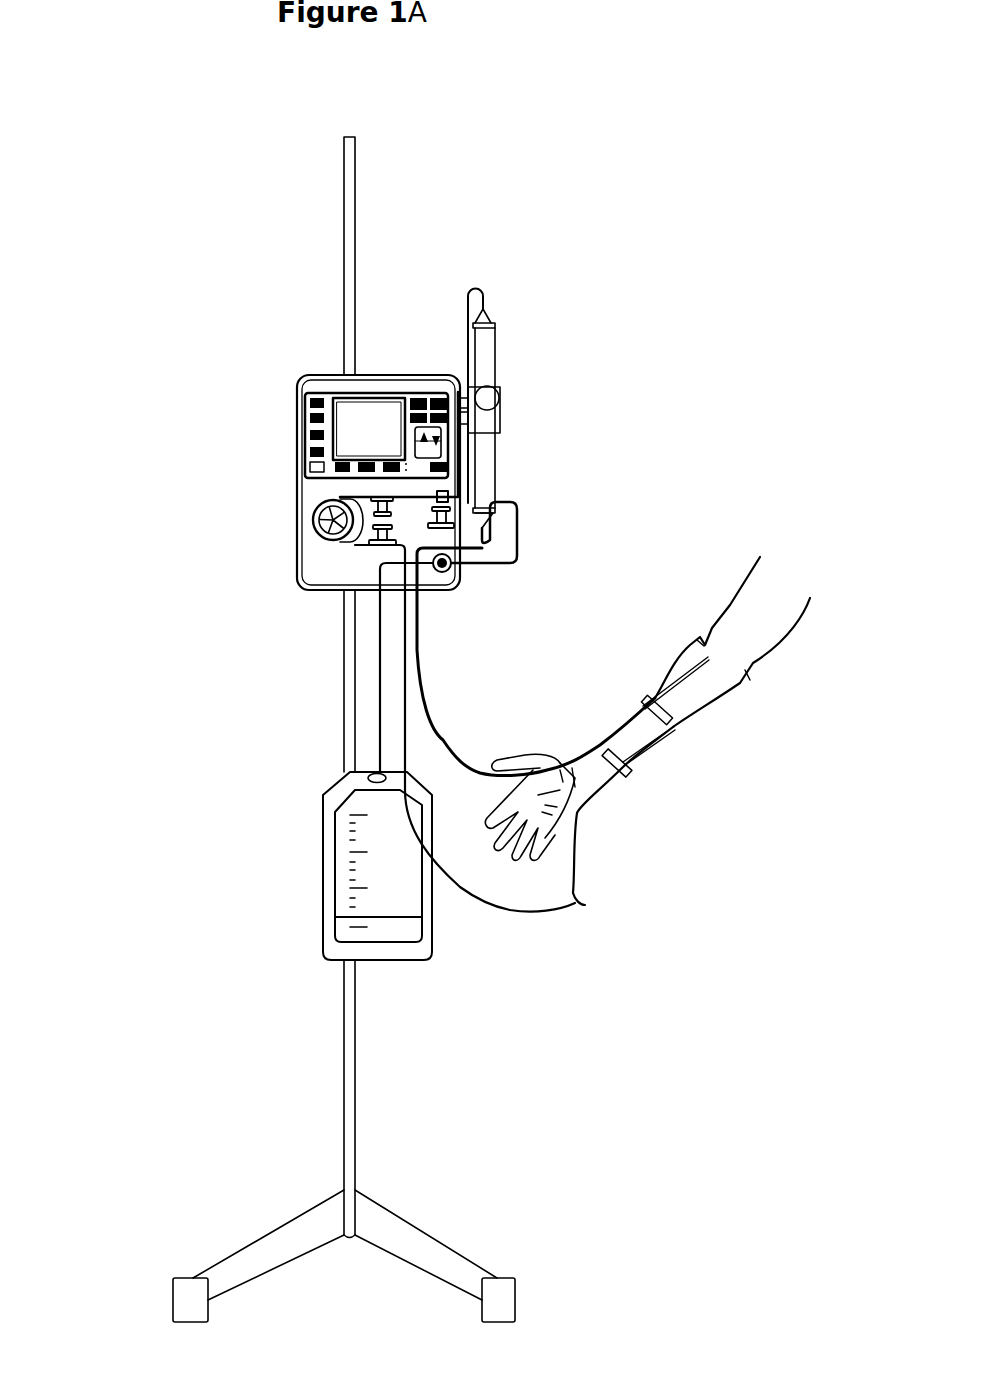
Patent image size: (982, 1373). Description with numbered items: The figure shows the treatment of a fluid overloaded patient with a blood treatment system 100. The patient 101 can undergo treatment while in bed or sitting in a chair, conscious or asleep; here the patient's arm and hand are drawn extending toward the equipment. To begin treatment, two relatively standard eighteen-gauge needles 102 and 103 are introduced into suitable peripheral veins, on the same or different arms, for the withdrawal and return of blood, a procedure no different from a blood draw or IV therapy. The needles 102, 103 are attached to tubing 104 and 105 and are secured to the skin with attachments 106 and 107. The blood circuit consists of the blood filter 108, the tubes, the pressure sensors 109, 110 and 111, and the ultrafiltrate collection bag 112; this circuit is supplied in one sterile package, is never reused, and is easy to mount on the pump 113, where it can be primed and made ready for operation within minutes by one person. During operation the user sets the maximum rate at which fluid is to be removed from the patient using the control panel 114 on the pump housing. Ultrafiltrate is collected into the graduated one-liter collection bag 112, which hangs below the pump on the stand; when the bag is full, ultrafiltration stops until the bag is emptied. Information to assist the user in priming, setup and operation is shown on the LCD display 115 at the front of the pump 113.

The blood treatment system 100 is at (273, 353).
The patient 101 is at (850, 540).
The needle 102 is at (697, 672).
The needle 103 is at (652, 750).
The tubing 104 is at (450, 753).
The tubing 105 is at (583, 902).
The attachment 106 is at (623, 773).
The attachment 107 is at (640, 697).
The blood filter 108 is at (495, 360).
The pressure sensor 109 is at (447, 537).
The pressure sensor 110 is at (377, 543).
The pressure sensor 111 is at (378, 507).
The ultrafiltrate collection bag 112 is at (355, 855).
The pump 113 is at (318, 520).
The control panel 114 is at (310, 450).
The LCD display 115 is at (363, 438).